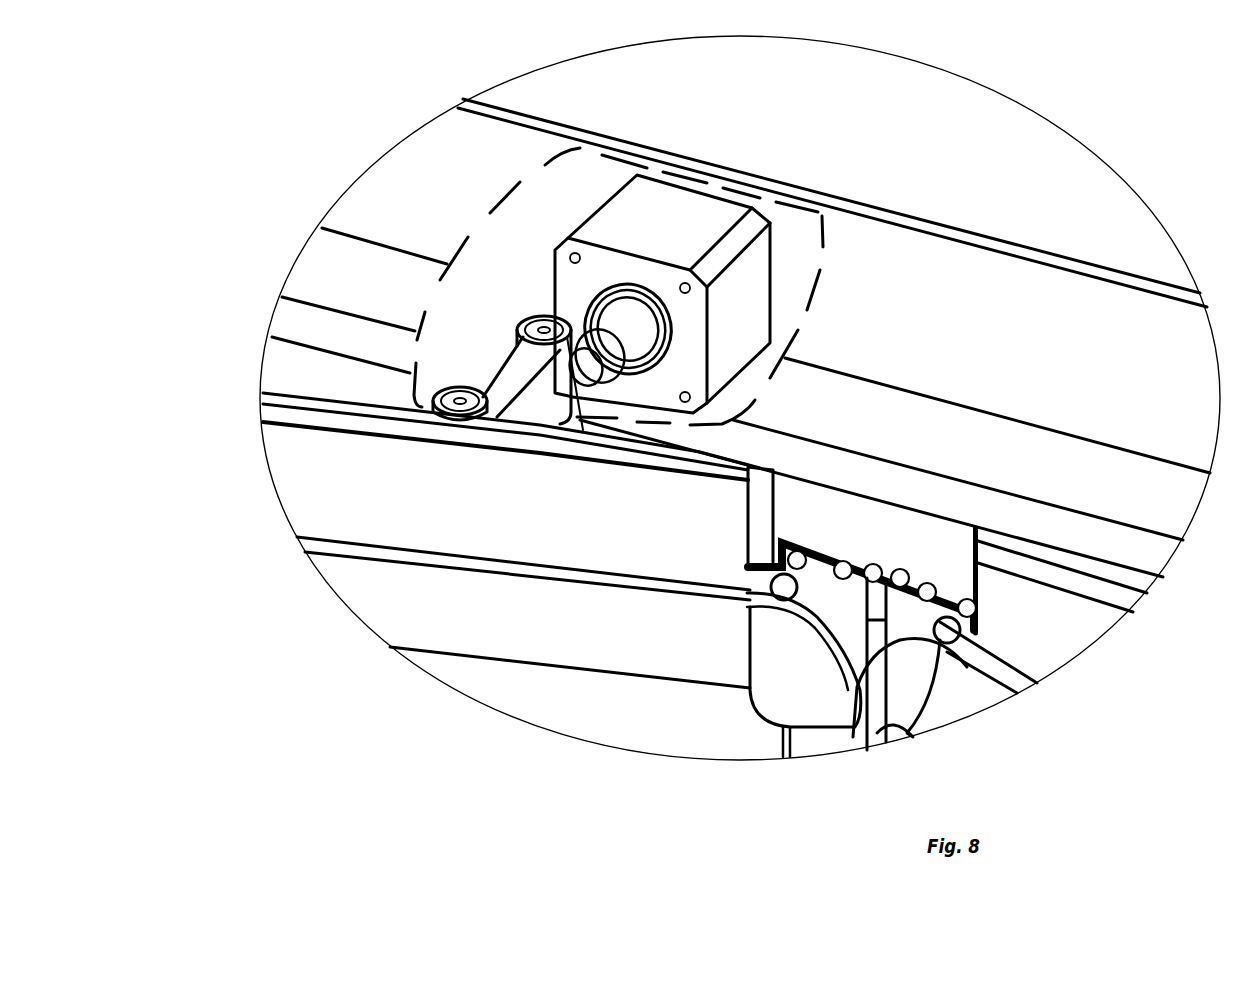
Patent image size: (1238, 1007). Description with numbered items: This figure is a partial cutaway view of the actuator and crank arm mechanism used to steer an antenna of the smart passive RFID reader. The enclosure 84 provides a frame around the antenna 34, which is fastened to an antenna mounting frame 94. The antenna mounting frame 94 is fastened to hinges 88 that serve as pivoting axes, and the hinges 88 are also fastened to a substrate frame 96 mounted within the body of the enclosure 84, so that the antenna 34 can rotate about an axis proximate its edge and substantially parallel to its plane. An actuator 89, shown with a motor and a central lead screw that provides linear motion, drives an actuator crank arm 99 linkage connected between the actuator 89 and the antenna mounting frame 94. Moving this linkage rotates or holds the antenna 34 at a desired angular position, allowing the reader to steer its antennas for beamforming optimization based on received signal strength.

The antenna 34 is at (555, 688).
The enclosure 84 is at (975, 303).
The hinge 88 is at (905, 622).
The actuator 89 is at (597, 208).
The antenna mounting frame 94 is at (542, 513).
The substrate frame 96 is at (923, 542).
The actuator crank arm 99 is at (496, 322).